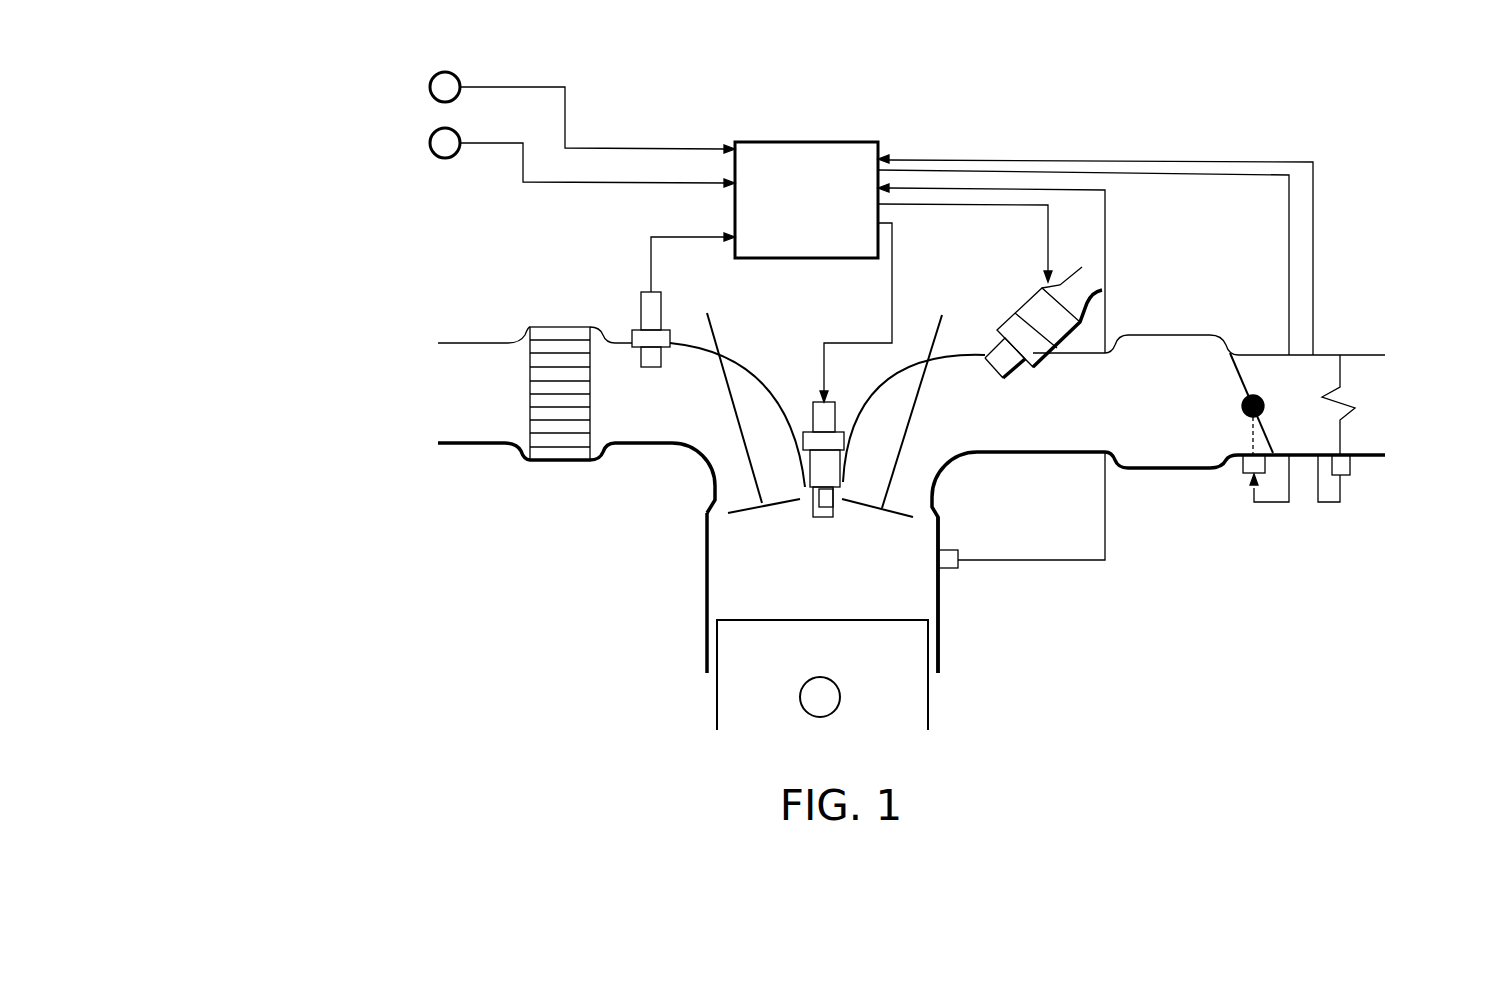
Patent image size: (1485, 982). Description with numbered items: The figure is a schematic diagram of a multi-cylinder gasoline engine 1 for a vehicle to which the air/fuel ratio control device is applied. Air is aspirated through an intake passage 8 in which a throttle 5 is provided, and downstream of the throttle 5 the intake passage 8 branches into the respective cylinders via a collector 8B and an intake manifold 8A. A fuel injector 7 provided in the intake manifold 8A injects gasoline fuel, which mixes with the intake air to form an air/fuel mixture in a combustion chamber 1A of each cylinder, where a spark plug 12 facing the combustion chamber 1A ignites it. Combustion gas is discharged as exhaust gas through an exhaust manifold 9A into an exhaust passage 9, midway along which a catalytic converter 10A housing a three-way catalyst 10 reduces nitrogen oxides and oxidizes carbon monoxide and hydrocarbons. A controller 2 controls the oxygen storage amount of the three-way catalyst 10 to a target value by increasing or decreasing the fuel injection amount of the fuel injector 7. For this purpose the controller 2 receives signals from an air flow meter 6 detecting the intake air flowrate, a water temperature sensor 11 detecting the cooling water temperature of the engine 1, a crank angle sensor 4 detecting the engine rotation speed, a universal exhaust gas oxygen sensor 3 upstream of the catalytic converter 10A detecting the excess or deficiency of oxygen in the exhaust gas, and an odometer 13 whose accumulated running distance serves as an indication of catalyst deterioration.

The engine 1 is at (690, 620).
The combustion chamber 1A is at (826, 600).
The controller 2 is at (792, 141).
The universal exhaust gas oxygen sensor 3 is at (640, 310).
The crank angle sensor 4 is at (428, 140).
The throttle 5 is at (1242, 378).
The air flow meter 6 is at (1352, 470).
The fuel injector 7 is at (1005, 322).
The intake passage 8 is at (1330, 355).
The intake manifold 8A is at (875, 403).
The collector 8B is at (1157, 470).
The exhaust passage 9 is at (447, 445).
The exhaust manifold 9A is at (770, 397).
The three-way catalyst 10 is at (530, 407).
The catalytic converter 10A is at (526, 461).
The water temperature sensor 11 is at (950, 570).
The spark plug 12 is at (810, 510).
The odometer 13 is at (430, 78).